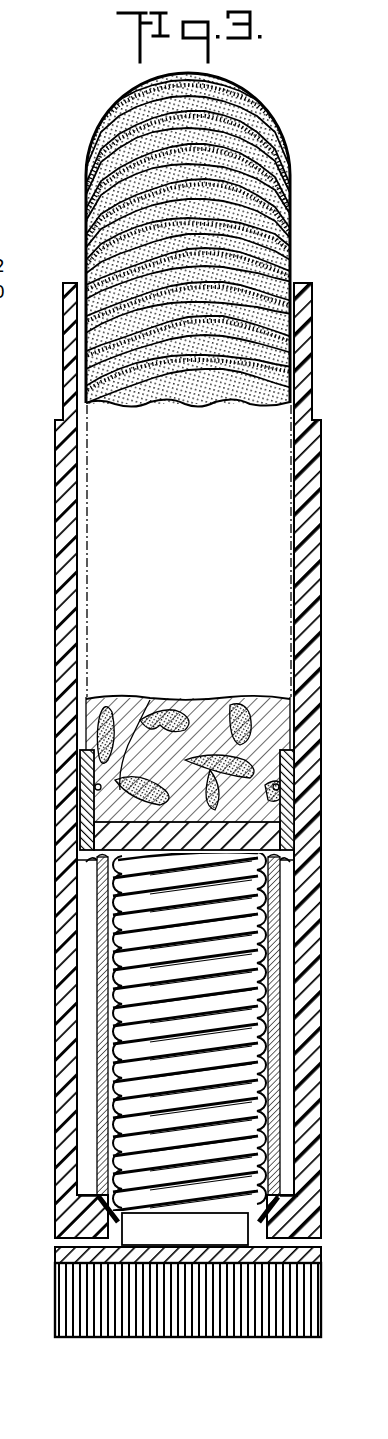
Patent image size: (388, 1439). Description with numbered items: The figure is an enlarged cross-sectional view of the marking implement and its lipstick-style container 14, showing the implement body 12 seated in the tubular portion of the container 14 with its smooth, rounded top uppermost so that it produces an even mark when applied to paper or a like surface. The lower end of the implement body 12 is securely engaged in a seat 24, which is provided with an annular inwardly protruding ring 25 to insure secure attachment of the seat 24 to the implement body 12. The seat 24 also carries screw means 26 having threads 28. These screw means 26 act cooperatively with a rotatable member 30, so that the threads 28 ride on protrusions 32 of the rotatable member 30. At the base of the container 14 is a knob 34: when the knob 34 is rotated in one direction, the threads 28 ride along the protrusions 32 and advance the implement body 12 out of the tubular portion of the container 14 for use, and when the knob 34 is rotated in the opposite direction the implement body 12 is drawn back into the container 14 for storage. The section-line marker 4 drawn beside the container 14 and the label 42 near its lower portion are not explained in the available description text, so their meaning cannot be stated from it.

The implement body 12 is at (292, 200).
The container 14 is at (66, 987).
The seat 24 is at (118, 698).
The annular inwardly protruding ring 25 is at (82, 797).
The screw means 26 is at (134, 910).
The threads 28 is at (100, 884).
The rotatable member 30 is at (198, 1239).
The protrusions 32 is at (95, 862).
The knob 34 is at (76, 1309).
The gap 42 is at (48, 1184).
The section line 4- 4 is at (28, 747).